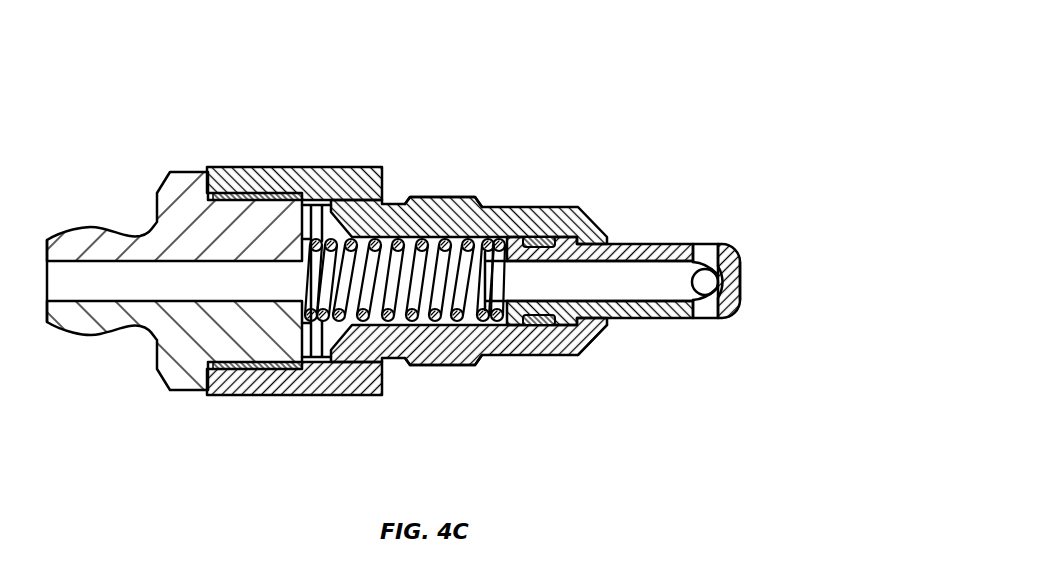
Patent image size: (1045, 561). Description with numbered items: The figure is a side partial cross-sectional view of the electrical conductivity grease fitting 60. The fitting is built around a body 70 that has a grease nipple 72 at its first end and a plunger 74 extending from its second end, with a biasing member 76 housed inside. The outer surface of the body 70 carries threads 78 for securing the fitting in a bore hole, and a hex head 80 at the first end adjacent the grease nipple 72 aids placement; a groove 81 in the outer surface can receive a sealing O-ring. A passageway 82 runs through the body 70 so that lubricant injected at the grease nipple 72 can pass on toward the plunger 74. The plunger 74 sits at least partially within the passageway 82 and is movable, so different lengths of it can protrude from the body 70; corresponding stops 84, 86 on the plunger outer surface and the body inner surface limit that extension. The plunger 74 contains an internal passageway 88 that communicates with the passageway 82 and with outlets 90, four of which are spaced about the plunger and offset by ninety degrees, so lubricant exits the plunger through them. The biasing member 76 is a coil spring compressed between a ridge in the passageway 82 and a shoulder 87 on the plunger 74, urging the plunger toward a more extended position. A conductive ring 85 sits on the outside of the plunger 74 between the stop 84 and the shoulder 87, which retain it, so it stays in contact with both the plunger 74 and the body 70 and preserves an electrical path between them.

The electrical conductivity grease fitting 60 is at (664, 112).
The body 70 is at (553, 178).
The grease nipple 72 is at (128, 226).
The plunger 74 is at (676, 210).
The biasing member 76 is at (447, 243).
The threads 78 is at (427, 197).
The hex head 80 is at (297, 167).
The groove 81 is at (393, 196).
The passageway 82 is at (432, 306).
The stop 84 is at (557, 325).
The conductive ring 85 is at (539, 326).
The stop 86 is at (573, 353).
The shoulder 87 is at (513, 323).
The internal passageway 88 is at (630, 294).
The outlet 90 is at (708, 240).